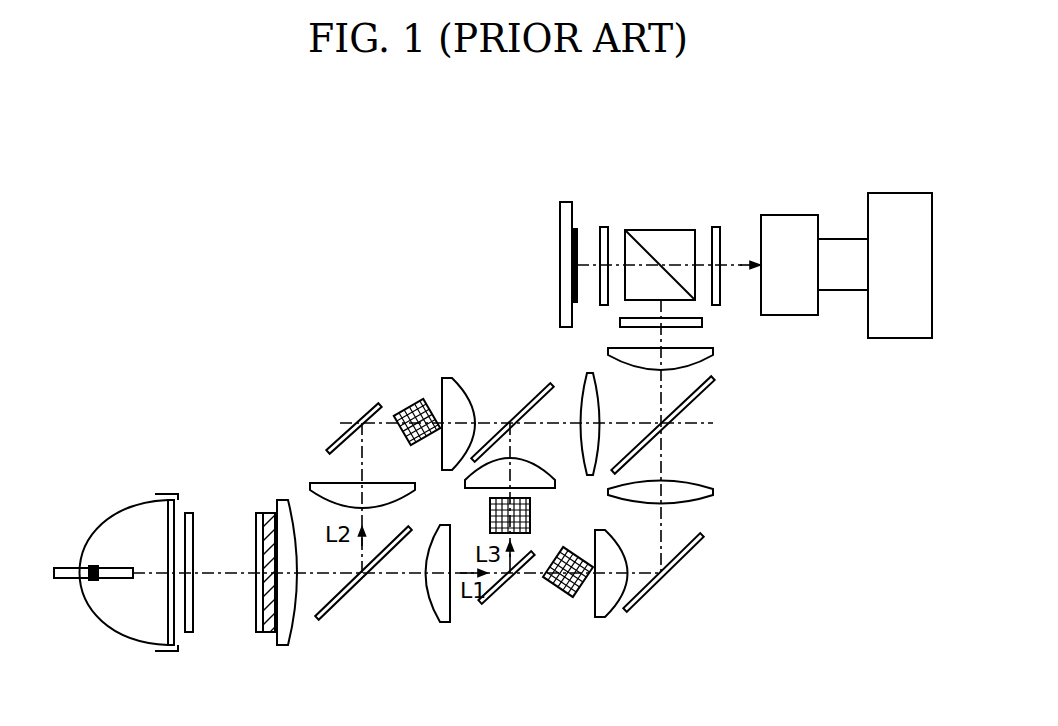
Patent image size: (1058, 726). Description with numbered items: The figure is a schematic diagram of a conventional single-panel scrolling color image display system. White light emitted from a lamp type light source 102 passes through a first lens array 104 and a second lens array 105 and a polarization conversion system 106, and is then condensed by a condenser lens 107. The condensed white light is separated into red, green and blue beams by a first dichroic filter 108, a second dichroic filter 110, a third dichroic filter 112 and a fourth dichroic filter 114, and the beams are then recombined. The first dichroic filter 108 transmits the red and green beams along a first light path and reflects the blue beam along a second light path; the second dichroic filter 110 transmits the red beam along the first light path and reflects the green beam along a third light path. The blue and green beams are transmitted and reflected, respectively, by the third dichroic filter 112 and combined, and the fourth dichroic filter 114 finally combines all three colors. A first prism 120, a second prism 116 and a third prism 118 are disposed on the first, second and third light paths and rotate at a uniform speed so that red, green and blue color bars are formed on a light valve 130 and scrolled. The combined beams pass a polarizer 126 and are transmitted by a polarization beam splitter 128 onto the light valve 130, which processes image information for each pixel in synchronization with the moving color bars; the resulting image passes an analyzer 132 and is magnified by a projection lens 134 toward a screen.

The lamp type light source 102 is at (125, 532).
The first lens array 104 is at (192, 535).
The second lens array 105 is at (257, 630).
The polarization conversion system 106 is at (270, 632).
The condenser lens 107 is at (290, 627).
The first dichroic filter 108 is at (345, 598).
The second dichroic filter 110 is at (505, 582).
The third dichroic filter 112 is at (527, 422).
The fourth dichroic filter 114 is at (680, 410).
The second prism 116 is at (415, 403).
The third prism 118 is at (490, 513).
The first prism 120 is at (570, 597).
The polarizer 126 is at (702, 322).
The polarization beam splitter 128 is at (658, 230).
The light valve 130 is at (560, 264).
The analyzer 132 is at (717, 227).
The projection lens 134 is at (848, 247).